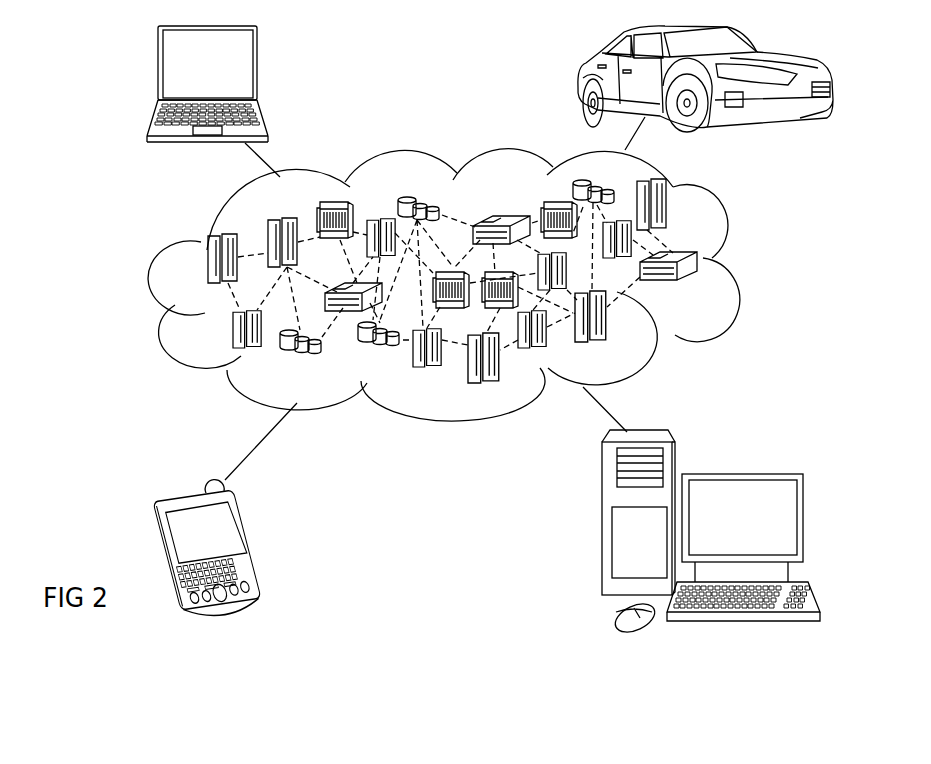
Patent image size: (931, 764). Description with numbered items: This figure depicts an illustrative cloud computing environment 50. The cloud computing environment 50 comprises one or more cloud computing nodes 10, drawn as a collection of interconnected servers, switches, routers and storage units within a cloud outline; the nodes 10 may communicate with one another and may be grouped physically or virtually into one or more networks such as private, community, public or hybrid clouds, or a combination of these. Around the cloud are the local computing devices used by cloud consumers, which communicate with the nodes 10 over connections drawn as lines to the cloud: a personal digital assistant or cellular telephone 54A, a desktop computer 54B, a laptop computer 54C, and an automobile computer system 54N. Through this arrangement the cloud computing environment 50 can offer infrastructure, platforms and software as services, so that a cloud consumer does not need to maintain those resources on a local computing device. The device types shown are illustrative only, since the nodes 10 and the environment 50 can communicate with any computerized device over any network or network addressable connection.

The cloud computing nodes 10 is at (695, 285).
The cloud computing environment 50 is at (740, 265).
The personal digital assistant (PDA) or cellular telephone 54A is at (252, 542).
The desktop computer 54B is at (739, 473).
The laptop computer 54C is at (257, 68).
The automobile computer system 54N is at (578, 82).